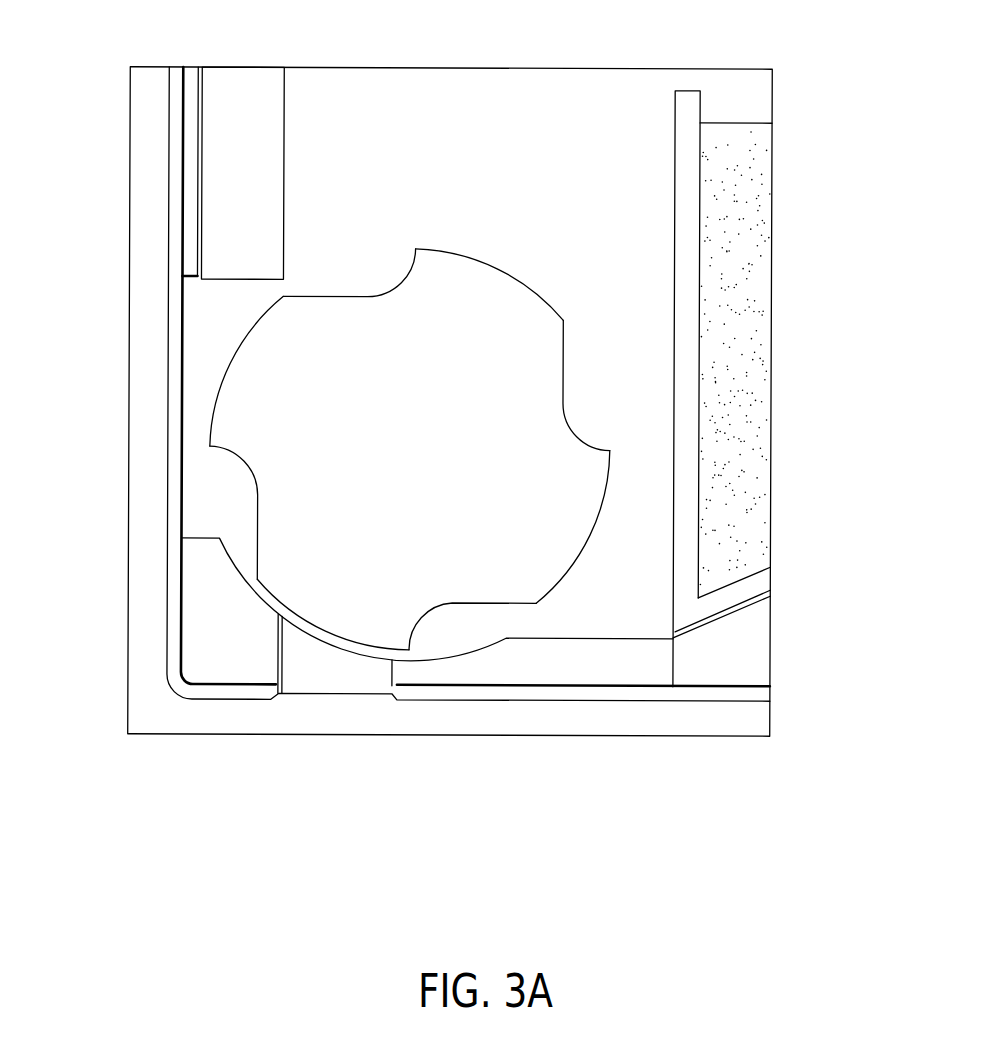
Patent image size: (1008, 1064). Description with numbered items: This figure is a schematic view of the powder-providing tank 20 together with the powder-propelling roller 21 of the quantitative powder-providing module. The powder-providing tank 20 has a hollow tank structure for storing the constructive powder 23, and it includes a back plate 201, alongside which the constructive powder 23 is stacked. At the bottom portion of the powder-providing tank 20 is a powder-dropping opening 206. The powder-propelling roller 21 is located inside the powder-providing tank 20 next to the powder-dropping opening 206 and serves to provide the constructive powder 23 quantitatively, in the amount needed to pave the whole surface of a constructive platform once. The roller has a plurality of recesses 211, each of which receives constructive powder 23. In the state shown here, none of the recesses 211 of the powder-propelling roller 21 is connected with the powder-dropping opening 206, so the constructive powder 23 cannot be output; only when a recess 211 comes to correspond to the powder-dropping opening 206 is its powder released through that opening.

The powder-providing tank 20 is at (168, 233).
The back plate 201 is at (688, 109).
The constructive powder 23 is at (740, 187).
The powder-propelling roller 21 is at (482, 403).
The recesses 211 is at (370, 283).
The powder-dropping opening 206 is at (343, 670).